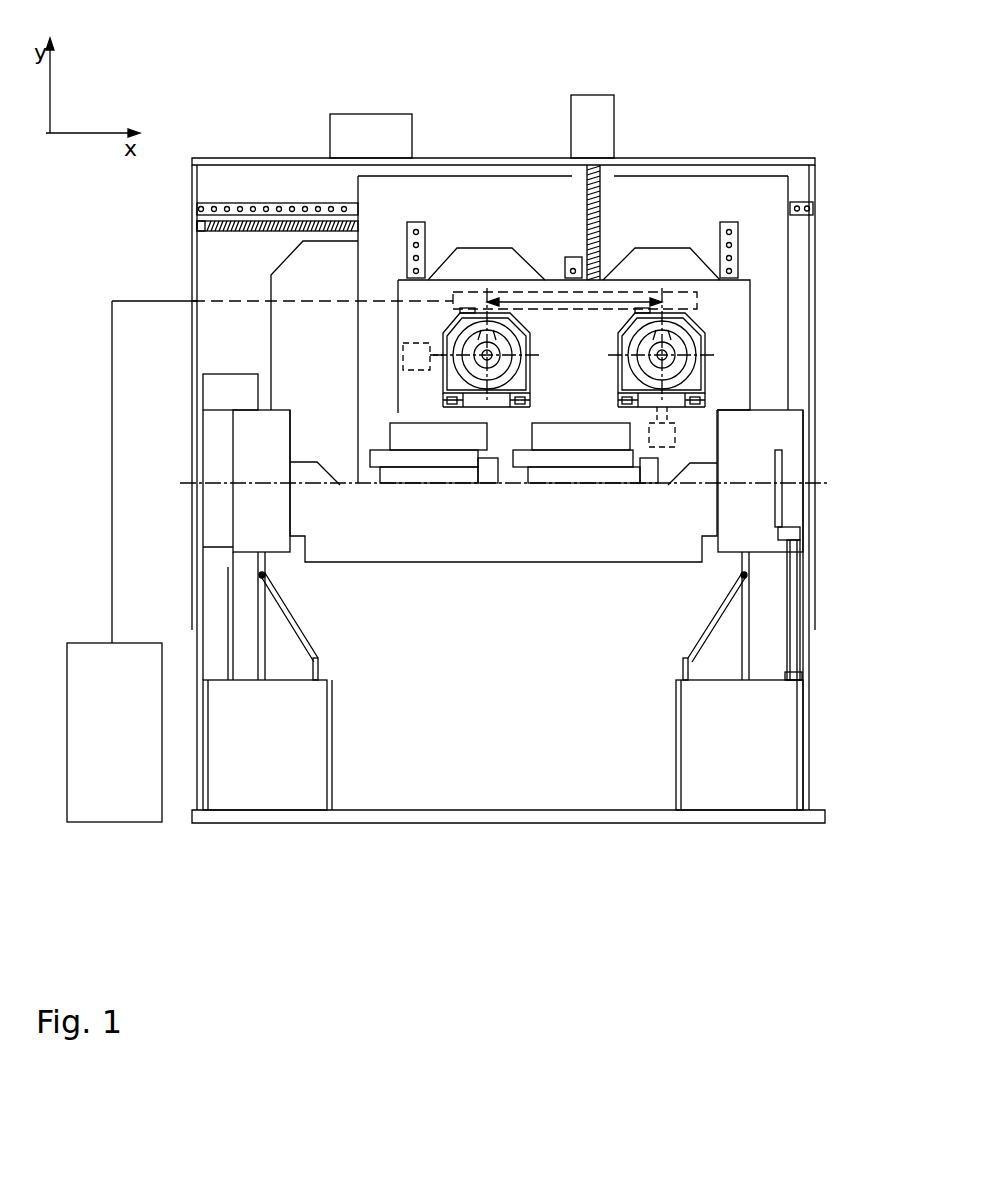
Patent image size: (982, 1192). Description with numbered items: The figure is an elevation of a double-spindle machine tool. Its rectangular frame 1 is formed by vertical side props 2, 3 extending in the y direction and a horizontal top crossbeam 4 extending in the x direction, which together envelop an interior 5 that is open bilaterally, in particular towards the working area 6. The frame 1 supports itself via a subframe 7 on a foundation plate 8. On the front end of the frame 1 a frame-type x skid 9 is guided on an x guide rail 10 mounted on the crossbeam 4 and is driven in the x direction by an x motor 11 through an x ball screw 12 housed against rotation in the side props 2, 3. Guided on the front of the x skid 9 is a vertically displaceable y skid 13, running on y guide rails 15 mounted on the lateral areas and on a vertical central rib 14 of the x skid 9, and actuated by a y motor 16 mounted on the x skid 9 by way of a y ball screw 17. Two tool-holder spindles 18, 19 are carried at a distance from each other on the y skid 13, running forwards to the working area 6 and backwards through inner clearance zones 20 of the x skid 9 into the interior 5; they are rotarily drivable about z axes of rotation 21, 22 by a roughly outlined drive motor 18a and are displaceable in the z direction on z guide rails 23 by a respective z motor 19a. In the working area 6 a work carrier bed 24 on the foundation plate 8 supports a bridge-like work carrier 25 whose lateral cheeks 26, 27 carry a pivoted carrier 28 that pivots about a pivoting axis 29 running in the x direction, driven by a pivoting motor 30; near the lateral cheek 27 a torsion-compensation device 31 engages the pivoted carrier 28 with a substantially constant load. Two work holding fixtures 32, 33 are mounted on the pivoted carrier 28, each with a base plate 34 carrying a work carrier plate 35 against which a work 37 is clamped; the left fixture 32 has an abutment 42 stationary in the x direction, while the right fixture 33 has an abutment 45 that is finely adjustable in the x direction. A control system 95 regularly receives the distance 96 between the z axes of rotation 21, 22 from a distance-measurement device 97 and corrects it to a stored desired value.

The frame 1 is at (817, 202).
The side prop 2 is at (225, 293).
The side prop 3 is at (767, 280).
The top crossbeam 4 is at (288, 176).
The interior 5 is at (311, 284).
The working area 6 is at (500, 680).
The subframe 7 is at (818, 708).
The foundation plate 8 is at (817, 813).
The x skid 9 is at (790, 233).
The x guide rail 10 is at (220, 208).
The x motor 11 is at (342, 120).
The x ball screw 12 is at (235, 228).
The y skid 13 is at (752, 296).
The vertical central rib 14 is at (553, 277).
The y guide rail 15 is at (416, 228).
The y motor 16 is at (600, 103).
The y ball screw 17 is at (600, 208).
The tool-holder spindle 18 is at (497, 347).
The drive motor 18a is at (410, 357).
The tool-holder spindle 19 is at (678, 340).
The z motor 19a is at (675, 432).
The inner clearance zone 20 is at (480, 255).
The z axis of rotation 21 is at (397, 355).
The z axis of rotation 22 is at (673, 365).
The z guide rail 23 is at (447, 402).
The work carrier bed 24 is at (268, 785).
The work carrier 25 is at (360, 565).
The lateral cheek 26 is at (240, 530).
The lateral cheek 27 is at (750, 500).
The pivoted carrier 28 is at (607, 547).
The pivoting axis 29 is at (752, 480).
The pivoting motor 30 is at (217, 385).
The torsion-compensation device 31 is at (803, 573).
The work holding fixture 32 is at (447, 487).
The work holding fixture 33 is at (577, 487).
The base plate 34 is at (290, 473).
The work carrier plate 35 is at (413, 460).
The work 37 is at (433, 443).
The abutment 42 is at (377, 462).
The abutment 45 is at (540, 462).
The control system 95 is at (113, 813).
The distance 96 is at (572, 296).
The distance-measurement device 97 is at (470, 295).